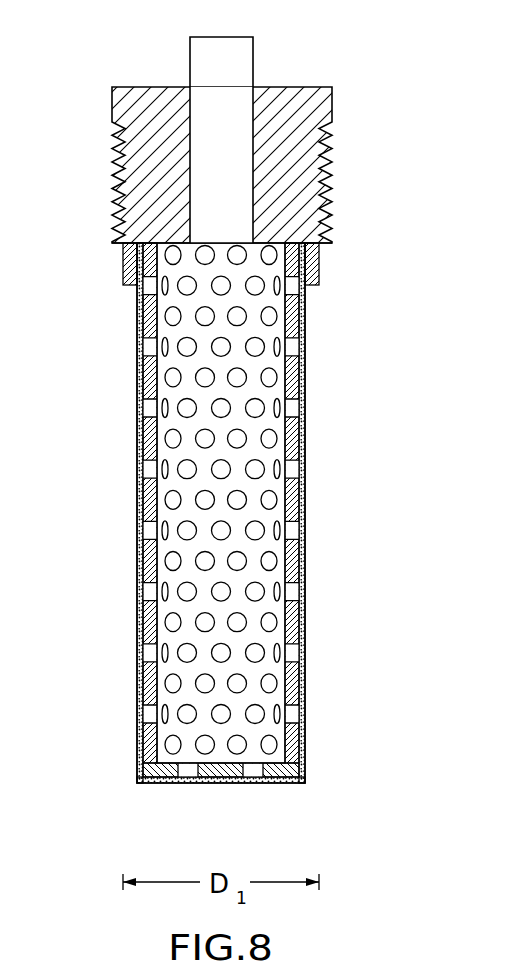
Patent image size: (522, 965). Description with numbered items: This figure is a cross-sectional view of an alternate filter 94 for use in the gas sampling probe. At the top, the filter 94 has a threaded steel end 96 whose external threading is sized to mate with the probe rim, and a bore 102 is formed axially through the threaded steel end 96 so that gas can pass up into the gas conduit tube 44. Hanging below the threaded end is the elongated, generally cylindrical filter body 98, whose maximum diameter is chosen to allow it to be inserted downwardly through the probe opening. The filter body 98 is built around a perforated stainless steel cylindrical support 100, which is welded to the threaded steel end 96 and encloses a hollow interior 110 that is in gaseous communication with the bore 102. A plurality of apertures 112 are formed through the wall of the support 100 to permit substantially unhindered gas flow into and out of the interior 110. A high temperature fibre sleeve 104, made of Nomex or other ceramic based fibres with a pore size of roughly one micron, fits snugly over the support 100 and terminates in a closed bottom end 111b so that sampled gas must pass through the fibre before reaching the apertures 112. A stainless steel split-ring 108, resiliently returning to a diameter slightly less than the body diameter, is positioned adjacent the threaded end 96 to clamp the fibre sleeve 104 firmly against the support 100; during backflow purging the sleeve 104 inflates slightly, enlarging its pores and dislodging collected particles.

The gas conduit tube 44 is at (254, 39).
The filter 94 is at (332, 466).
The threaded steel end 96 is at (312, 139).
The filter body 98 is at (306, 505).
The cylindrical support 100 is at (292, 241).
The bore 102 is at (247, 153).
The high temperature fibre sleeve 104 is at (306, 634).
The split-ring 108 is at (121, 265).
The hollow interior 110 is at (178, 389).
The closed bottom end 111b is at (187, 783).
The apertures 112 is at (269, 377).